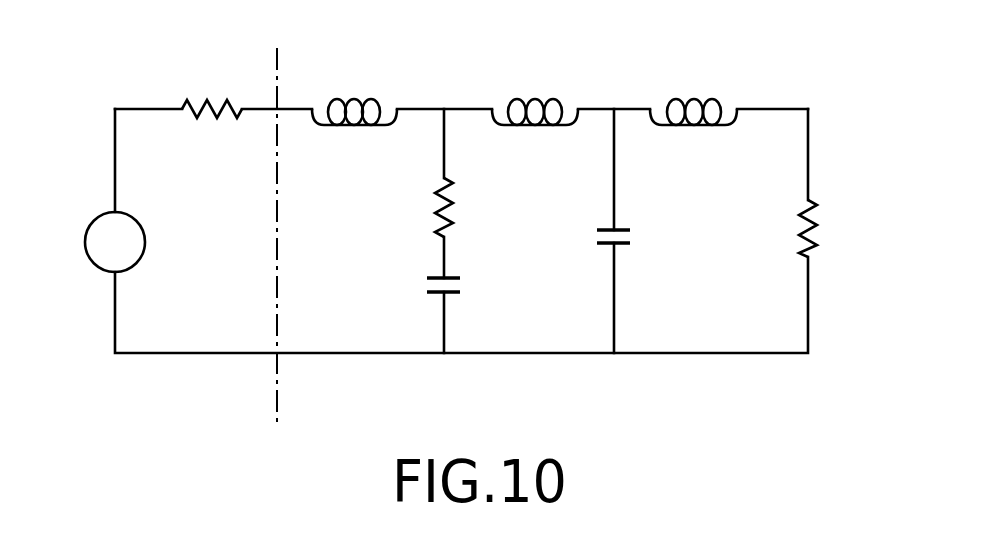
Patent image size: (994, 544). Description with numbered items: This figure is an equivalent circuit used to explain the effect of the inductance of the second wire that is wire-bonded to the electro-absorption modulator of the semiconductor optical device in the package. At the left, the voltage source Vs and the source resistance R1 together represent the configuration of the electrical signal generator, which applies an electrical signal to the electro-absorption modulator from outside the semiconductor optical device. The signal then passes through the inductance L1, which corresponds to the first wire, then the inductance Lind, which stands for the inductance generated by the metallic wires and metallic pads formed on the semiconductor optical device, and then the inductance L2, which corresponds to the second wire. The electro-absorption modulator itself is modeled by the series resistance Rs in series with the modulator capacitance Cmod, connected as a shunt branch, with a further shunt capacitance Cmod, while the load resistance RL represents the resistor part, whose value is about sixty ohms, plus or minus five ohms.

The voltage source of the electrical signal generator Vs is at (115, 242).
The source resistance of the electrical signal generator R1 is at (210, 93).
The inductance of the first wire L1 is at (354, 95).
The inductance of the metallic wires and pads Lind is at (535, 95).
The inductance of the second wire L2 is at (693, 95).
The series resistance of the electro-absorption modulator Rs is at (419, 207).
The capacitance of the electro-absorption modulator Cmod is at (493, 260).
The resistance of the resistor part RL is at (761, 228).